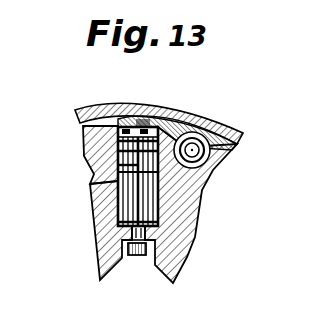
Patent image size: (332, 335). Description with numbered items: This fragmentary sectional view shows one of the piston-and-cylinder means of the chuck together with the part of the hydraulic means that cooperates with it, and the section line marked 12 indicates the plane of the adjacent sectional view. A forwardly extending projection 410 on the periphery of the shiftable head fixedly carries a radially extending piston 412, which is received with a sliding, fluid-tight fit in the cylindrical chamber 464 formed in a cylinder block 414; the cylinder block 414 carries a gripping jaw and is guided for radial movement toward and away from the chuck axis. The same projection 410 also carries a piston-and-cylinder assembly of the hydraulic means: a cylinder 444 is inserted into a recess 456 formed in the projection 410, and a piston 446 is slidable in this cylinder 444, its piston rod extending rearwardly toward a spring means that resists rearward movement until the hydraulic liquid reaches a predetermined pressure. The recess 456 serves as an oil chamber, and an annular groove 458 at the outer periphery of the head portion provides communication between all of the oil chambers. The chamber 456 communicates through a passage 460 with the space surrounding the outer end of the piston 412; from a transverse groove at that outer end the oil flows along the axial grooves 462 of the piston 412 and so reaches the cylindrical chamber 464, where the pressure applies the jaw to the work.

The projection 410 is at (210, 180).
The piston 412 is at (93, 183).
The cylinder block 414 is at (110, 253).
The cylinder 444 is at (214, 163).
The piston 446 is at (228, 128).
The recess 456 is at (180, 114).
The annular groove 458 is at (86, 127).
The passage 460 is at (143, 118).
The axial groove 462 is at (92, 168).
The cylindrical chamber 464 is at (150, 233).
The section line 12- 12 is at (240, 108).